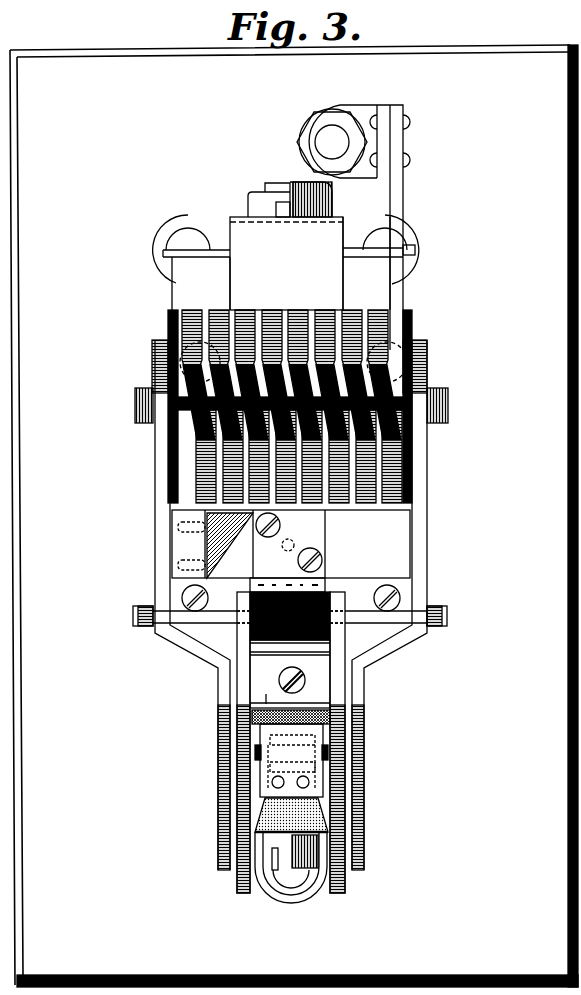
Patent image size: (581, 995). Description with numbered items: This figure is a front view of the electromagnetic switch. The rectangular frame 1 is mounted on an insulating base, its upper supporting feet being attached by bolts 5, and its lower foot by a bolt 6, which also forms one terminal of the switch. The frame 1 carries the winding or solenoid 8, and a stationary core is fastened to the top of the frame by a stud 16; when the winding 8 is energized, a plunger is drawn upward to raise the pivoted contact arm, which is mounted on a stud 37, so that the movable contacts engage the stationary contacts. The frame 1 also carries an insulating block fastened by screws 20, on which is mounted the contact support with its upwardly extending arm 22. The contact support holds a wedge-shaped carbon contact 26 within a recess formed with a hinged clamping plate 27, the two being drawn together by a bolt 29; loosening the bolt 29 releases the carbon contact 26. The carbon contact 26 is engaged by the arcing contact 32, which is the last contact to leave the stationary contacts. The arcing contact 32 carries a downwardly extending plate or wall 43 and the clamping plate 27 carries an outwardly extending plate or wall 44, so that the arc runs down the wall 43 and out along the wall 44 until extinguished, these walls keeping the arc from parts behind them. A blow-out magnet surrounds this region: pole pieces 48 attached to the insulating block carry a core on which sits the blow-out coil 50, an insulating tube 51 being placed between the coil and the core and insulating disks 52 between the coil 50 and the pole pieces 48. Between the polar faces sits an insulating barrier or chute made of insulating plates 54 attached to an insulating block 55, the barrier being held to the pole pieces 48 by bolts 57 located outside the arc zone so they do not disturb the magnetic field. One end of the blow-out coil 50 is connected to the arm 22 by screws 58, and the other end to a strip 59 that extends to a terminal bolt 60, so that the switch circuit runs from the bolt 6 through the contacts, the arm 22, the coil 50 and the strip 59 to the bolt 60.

The frame 1 is at (286, 263).
The bolts 5 is at (190, 240).
The bolt 6 is at (292, 880).
The winding or solenoid 8 is at (196, 280).
The stud 16 is at (276, 191).
The screws 20 is at (291, 544).
The upwardly extending arm 22 is at (264, 588).
The wedge-shaped carbon contact 26 is at (332, 718).
The clamping plate 27 is at (290, 674).
The bolt 29 is at (297, 678).
The arcing contact 32 is at (291, 778).
The stud 37 is at (283, 868).
The downwardly extending plate or wall 43 is at (220, 786).
The outwardly extending plate or wall 44 is at (266, 704).
The pole pieces 48 is at (155, 569).
The blow-out coil 50 is at (371, 311).
The insulating tube 51 is at (410, 370).
The insulating disks 52 is at (152, 360).
The insulating plates or disks 54 is at (238, 695).
The insulating block 55 is at (333, 593).
The bolts 57 is at (135, 612).
The screws 58 is at (310, 555).
The strip 59 is at (402, 140).
The bolt 60 is at (332, 142).